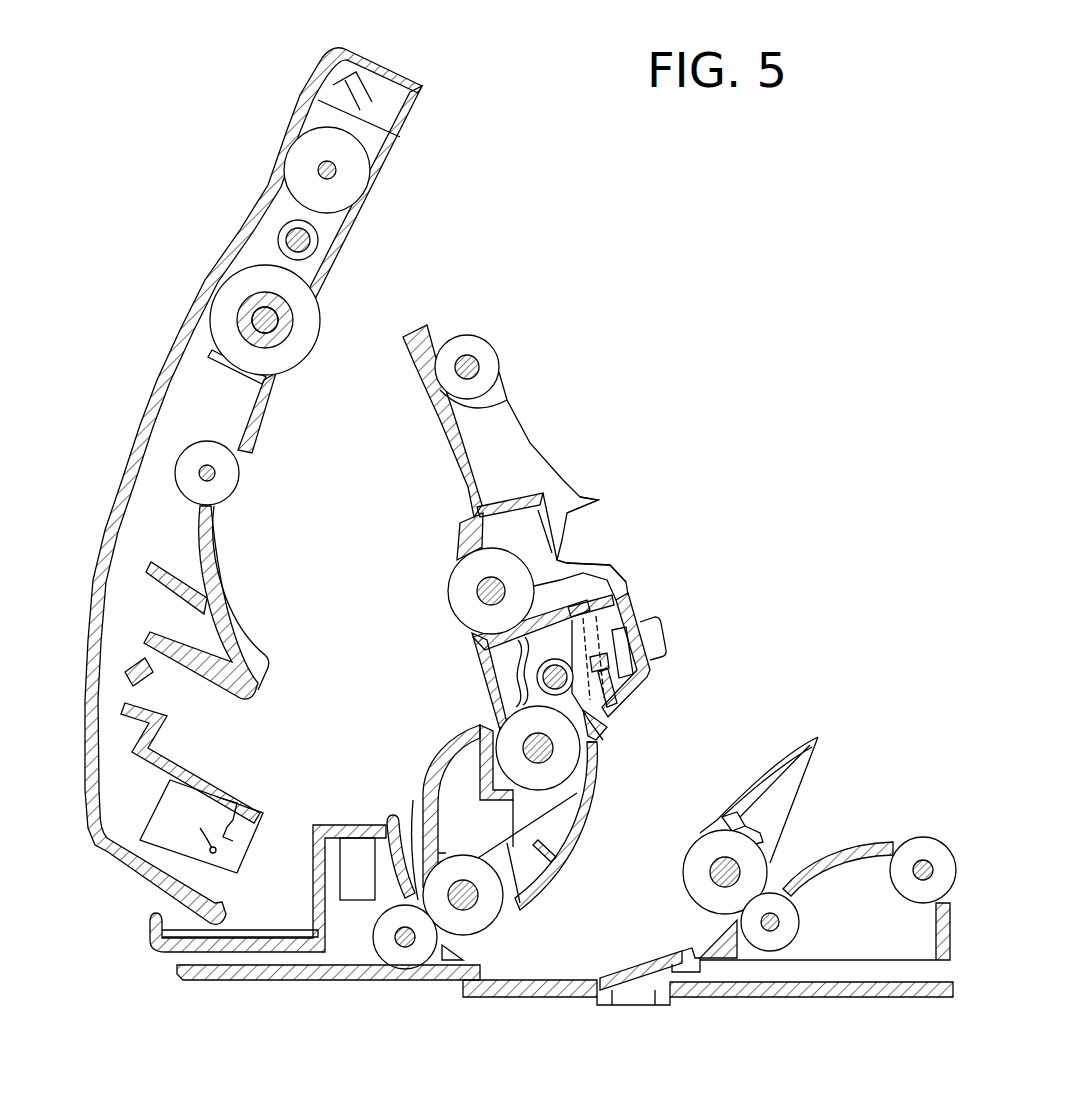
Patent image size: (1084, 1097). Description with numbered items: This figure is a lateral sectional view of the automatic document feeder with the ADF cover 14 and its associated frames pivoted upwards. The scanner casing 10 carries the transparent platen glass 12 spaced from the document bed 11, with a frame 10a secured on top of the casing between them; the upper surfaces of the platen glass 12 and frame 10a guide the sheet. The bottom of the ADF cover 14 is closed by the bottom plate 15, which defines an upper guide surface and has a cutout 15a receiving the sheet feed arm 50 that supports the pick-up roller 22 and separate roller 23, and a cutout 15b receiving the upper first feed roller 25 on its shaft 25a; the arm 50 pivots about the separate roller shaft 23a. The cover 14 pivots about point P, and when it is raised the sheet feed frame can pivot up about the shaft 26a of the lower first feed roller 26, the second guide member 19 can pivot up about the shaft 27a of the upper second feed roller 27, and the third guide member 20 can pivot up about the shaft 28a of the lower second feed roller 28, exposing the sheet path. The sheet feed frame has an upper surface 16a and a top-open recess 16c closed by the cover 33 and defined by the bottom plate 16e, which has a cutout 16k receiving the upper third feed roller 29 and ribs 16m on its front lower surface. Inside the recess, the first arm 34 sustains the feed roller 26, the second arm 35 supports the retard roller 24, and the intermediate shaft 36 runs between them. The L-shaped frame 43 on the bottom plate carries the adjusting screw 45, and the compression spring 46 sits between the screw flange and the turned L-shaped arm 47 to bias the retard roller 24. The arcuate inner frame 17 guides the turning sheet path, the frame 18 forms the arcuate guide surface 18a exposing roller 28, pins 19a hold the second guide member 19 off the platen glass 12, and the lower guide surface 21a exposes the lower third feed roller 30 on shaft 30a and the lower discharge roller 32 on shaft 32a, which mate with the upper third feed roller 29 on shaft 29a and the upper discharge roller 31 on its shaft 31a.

The scanner casing 10 is at (180, 966).
The frame 10a is at (668, 962).
The document bed 11 is at (825, 998).
The platen glass 12 is at (545, 980).
The ADF cover 14 is at (300, 120).
The bottom plate 15 is at (222, 605).
The cutout 15a is at (395, 158).
The cutout 15b is at (248, 455).
The upper surface 16a is at (440, 445).
The recess 16c is at (512, 515).
The bottom plate 16e is at (640, 622).
The cutout 16k is at (575, 535).
The ribs 16m is at (560, 470).
The inner frame 17 is at (443, 793).
The frame 18 is at (345, 825).
The guide surface 18a is at (395, 822).
The second guide member 19 is at (560, 883).
The pins 19a is at (583, 843).
The third guide member 20 is at (797, 748).
The lower guide surface 21a is at (852, 846).
The pick-up roller 22 is at (362, 183).
The separate roller 23 is at (310, 300).
The separate roller shaft 23a is at (272, 322).
The retard roller 24 is at (458, 600).
The upper first feed roller 25 is at (190, 490).
The roller shaft 25a is at (204, 465).
The lower first feed roller 26 is at (567, 772).
The shaft 26a is at (533, 741).
The upper second feed roller 27 is at (477, 927).
The shaft 27a is at (463, 880).
The lower second feed roller 28 is at (380, 947).
The shaft 28a is at (403, 947).
The upper third feed roller 29 is at (700, 855).
The shaft 29a is at (713, 870).
The lower third feed roller 30 is at (800, 918).
The shaft 30a is at (773, 927).
The upper paper discharge roller 31 is at (468, 343).
The pivot shaft 31a is at (482, 368).
The lower discharge roller 32 is at (920, 845).
The shaft 32a is at (923, 878).
The cover 33 is at (470, 537).
The first arm 34 is at (600, 725).
The second arm 35 is at (473, 635).
The intermediate shaft 36 is at (537, 687).
The L-shaped frame 43 is at (640, 700).
The screw 45 is at (617, 708).
The compression spring 46 is at (605, 600).
The turned L-shaped arm 47 is at (595, 598).
The sheet feed arm 50 is at (337, 226).